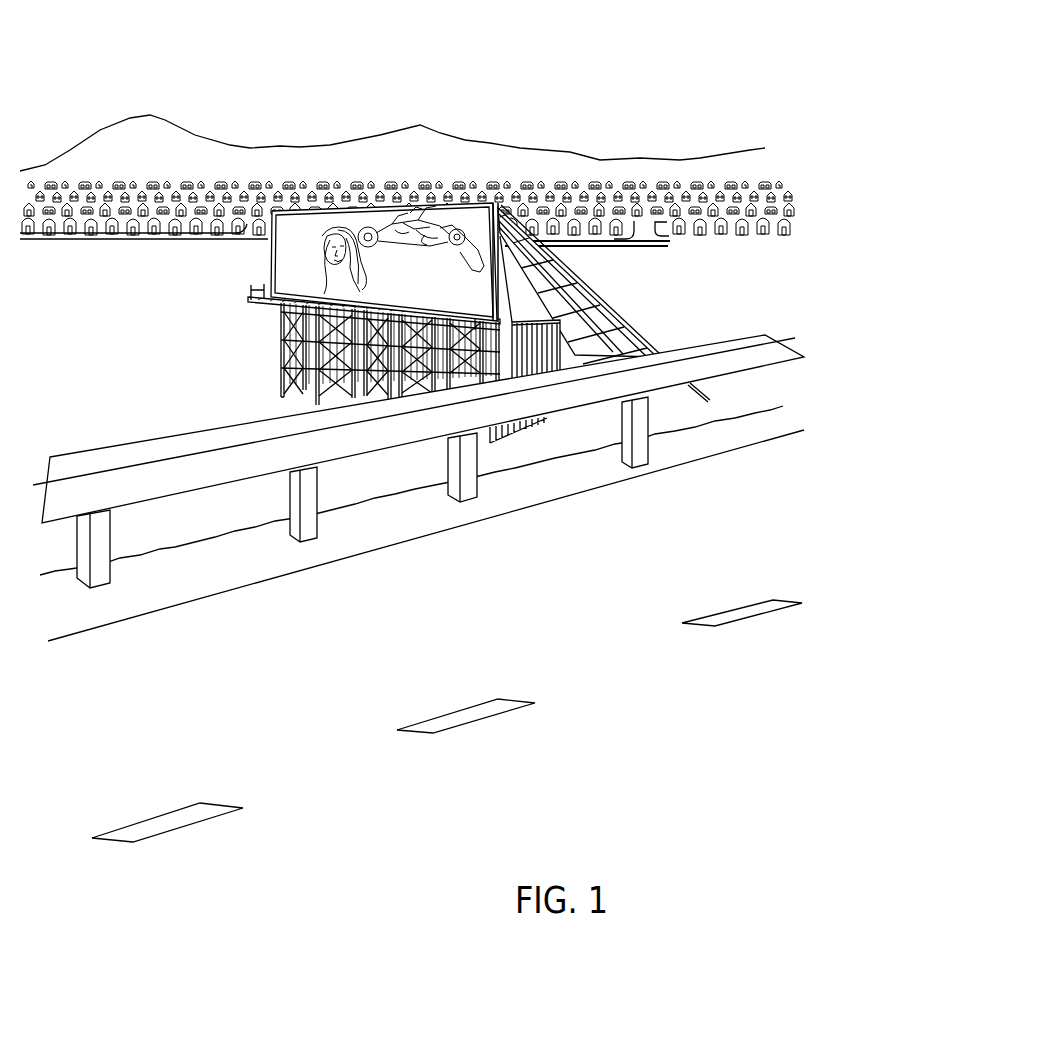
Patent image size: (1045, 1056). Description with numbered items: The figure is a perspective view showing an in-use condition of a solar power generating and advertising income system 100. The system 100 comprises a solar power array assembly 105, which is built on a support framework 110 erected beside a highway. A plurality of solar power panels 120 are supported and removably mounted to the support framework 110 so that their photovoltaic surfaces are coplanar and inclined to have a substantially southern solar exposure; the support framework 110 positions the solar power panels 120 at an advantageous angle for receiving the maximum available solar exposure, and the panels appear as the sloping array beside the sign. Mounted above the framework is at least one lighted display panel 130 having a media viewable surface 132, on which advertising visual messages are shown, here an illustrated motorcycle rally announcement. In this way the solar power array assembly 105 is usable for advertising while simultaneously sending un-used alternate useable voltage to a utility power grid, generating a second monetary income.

The solar power generating and advertising income system 100 is at (600, 27).
The solar power array assembly 105 is at (617, 64).
The support framework 110 is at (268, 378).
The solar power panels 120 is at (618, 298).
The lighted display panel 130 is at (268, 272).
The media viewable surface 132 is at (268, 256).